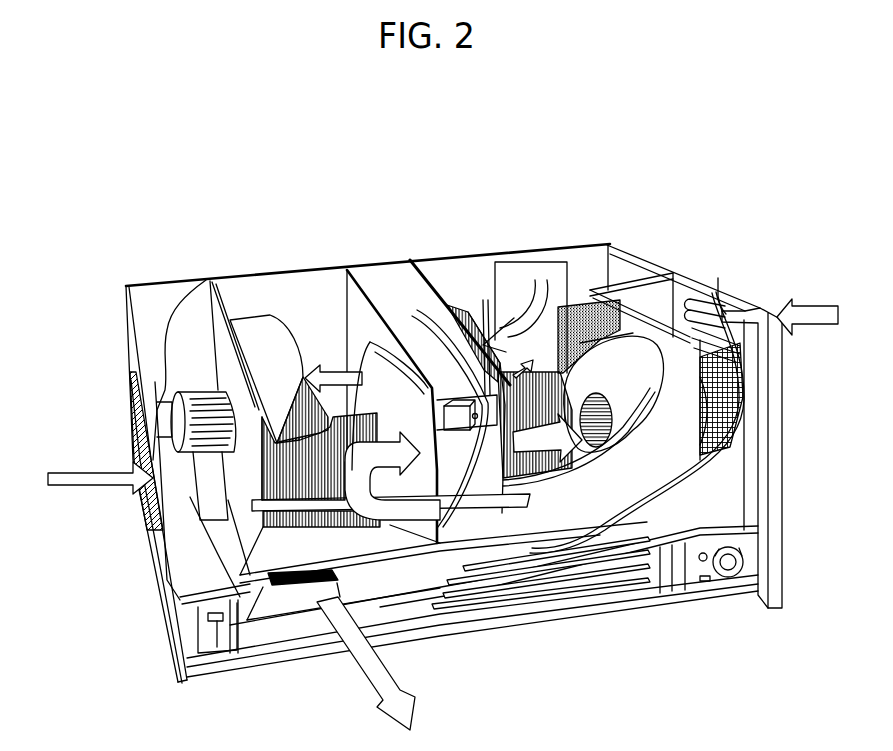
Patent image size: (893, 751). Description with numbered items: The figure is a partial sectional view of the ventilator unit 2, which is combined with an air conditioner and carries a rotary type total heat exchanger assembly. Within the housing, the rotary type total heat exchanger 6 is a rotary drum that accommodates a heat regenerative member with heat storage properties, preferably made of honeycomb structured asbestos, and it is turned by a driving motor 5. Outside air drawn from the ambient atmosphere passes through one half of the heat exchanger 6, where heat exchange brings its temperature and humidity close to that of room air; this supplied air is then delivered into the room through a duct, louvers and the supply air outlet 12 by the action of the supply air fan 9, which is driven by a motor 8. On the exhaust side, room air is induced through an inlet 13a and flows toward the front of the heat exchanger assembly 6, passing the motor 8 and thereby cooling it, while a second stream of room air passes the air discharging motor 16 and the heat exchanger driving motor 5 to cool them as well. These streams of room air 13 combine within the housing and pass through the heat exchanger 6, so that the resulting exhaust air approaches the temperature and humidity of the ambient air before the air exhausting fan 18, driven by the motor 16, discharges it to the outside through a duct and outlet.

The ventilator unit 2 is at (470, 280).
The driving motor 5 is at (455, 402).
The rotary type total heat exchanger 6 is at (400, 328).
The motor 8 is at (177, 407).
The supply air fan 9 is at (252, 333).
The supply air outlet 12 is at (539, 587).
The air flow arrows 13 is at (450, 407).
The inlet 13a is at (145, 436).
The air discharging motor 16 is at (743, 413).
The air exhausting fan 18 is at (632, 357).